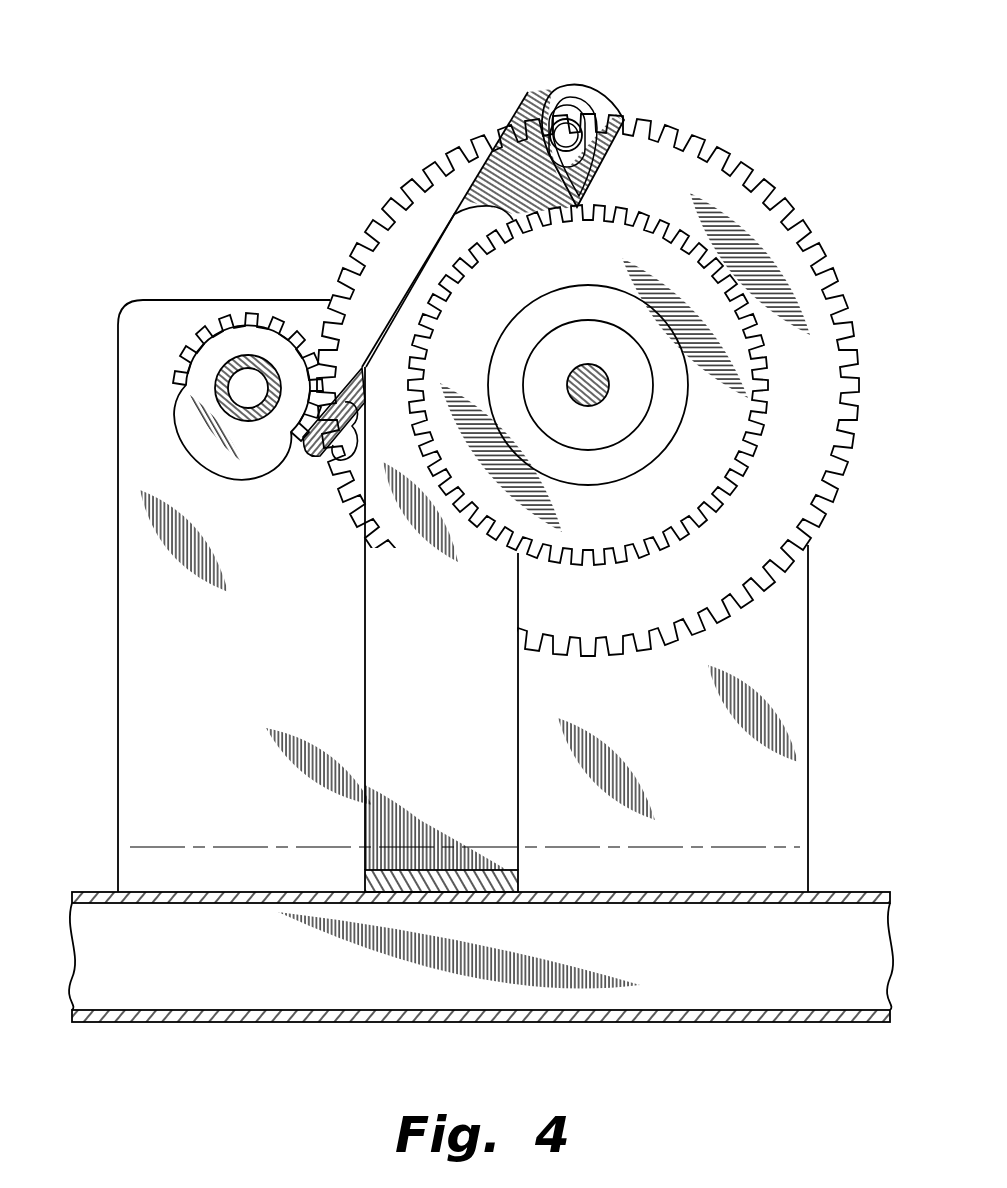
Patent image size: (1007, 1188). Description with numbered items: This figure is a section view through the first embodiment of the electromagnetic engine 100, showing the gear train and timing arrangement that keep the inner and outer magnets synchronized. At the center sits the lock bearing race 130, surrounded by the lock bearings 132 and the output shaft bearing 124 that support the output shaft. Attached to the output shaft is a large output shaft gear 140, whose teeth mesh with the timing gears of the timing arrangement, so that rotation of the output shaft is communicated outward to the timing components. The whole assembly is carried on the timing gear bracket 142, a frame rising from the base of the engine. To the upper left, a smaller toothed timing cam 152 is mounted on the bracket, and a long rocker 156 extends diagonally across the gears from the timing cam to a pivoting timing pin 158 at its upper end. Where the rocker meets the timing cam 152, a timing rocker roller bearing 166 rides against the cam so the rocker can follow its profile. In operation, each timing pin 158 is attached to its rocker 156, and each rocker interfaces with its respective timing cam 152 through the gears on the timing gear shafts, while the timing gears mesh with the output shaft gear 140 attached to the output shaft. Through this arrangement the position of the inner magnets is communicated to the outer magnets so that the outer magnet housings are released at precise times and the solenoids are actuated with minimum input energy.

The electromagnetic engine 100 is at (242, 180).
The output shaft bearing 124 is at (652, 524).
The lock bearing race 130 is at (612, 438).
The lock bearing 132 is at (600, 482).
The output shaft gear 140 is at (702, 594).
The timing gear bracket 142 is at (100, 890).
The timing cam 152 is at (170, 432).
The rocker 156 is at (463, 130).
The timing pin 158 is at (592, 108).
The timing rocker roller bearing 166 is at (340, 462).